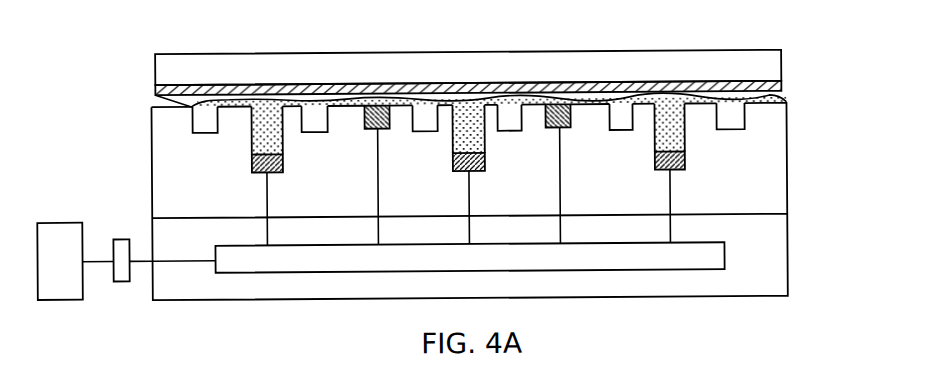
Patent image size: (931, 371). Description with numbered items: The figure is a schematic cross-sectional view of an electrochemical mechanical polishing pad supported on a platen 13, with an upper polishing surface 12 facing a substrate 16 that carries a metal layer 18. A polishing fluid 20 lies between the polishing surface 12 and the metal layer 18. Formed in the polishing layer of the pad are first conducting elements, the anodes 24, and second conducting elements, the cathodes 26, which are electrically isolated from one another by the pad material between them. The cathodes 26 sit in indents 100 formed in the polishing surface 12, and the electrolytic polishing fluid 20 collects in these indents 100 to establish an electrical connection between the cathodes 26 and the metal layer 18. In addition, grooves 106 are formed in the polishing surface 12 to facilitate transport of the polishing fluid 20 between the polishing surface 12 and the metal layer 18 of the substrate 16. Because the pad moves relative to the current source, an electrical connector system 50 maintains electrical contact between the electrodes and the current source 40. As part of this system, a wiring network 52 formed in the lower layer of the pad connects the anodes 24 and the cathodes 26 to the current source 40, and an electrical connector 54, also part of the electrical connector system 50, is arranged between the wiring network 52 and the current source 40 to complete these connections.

The polishing surface 12 is at (780, 99).
The platen 13 is at (788, 257).
The substrate 16 is at (672, 53).
The metal layer 18 is at (783, 88).
The polishing fluid 20 is at (203, 103).
The anodes 24 is at (382, 129).
The cathodes 26 is at (285, 163).
The current source 40 is at (53, 297).
The electrical connector system 50 is at (200, 286).
The wiring network 52 is at (725, 256).
The electrical connector 54 is at (118, 280).
The indents 100 is at (256, 136).
The grooves 106 is at (196, 132).